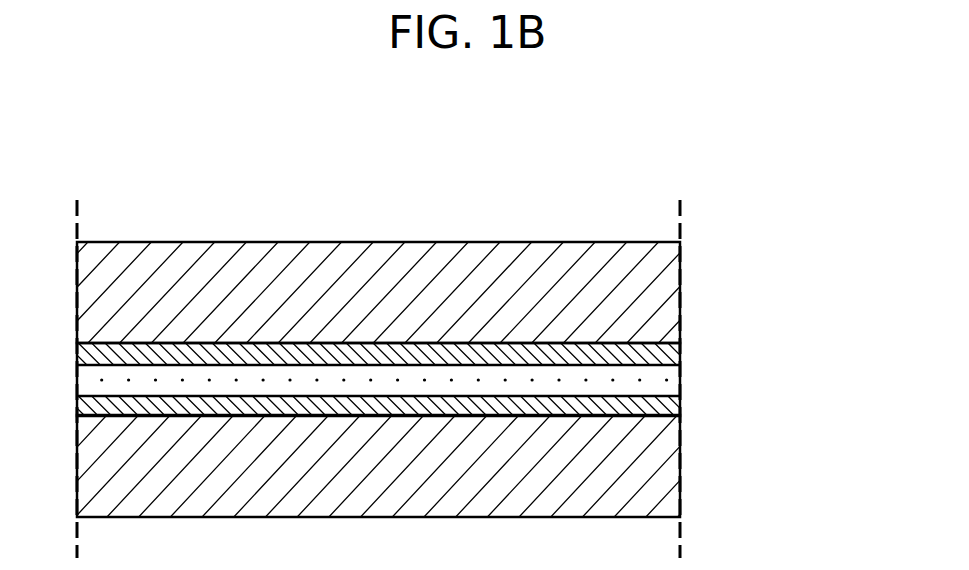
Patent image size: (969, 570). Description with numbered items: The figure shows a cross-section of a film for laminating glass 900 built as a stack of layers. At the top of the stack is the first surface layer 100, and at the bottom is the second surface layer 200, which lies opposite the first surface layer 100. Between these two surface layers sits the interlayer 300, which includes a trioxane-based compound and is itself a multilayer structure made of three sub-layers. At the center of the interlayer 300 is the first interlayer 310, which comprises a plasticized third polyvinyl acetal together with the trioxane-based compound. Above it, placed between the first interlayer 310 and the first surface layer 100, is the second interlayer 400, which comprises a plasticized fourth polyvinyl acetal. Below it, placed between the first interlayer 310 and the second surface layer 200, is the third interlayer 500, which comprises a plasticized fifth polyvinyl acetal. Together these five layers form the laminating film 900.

The film for laminating glass 900 is at (125, 152).
The first surface layer 100 is at (672, 262).
The second surface layer 200 is at (673, 488).
The interlayer 300 is at (472, 380).
The second interlayer 400 is at (685, 355).
The first interlayer 310 is at (683, 378).
The third interlayer 500 is at (687, 407).